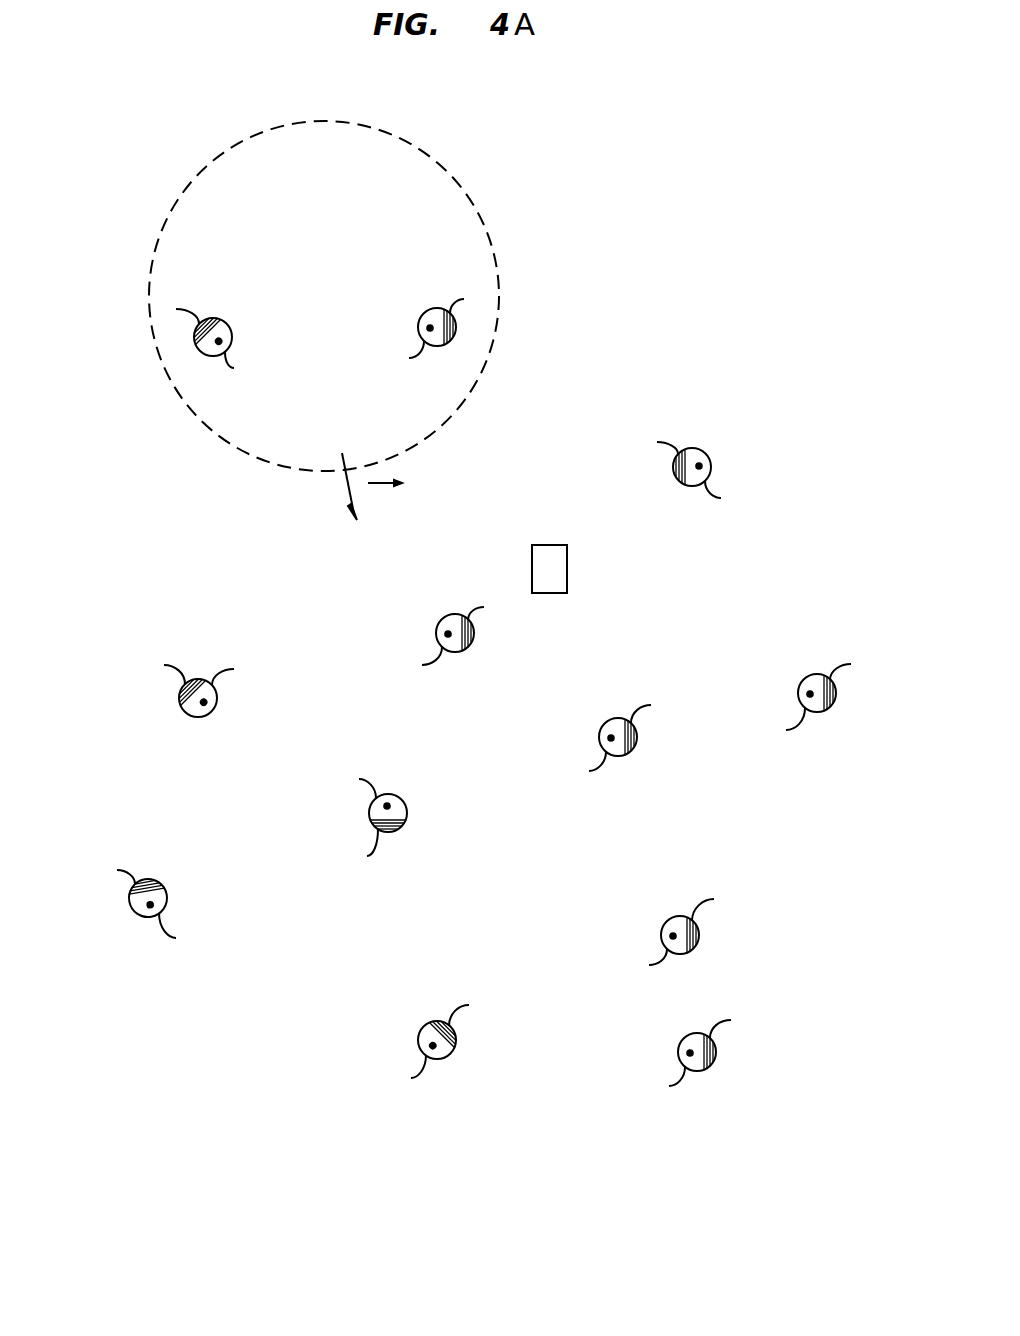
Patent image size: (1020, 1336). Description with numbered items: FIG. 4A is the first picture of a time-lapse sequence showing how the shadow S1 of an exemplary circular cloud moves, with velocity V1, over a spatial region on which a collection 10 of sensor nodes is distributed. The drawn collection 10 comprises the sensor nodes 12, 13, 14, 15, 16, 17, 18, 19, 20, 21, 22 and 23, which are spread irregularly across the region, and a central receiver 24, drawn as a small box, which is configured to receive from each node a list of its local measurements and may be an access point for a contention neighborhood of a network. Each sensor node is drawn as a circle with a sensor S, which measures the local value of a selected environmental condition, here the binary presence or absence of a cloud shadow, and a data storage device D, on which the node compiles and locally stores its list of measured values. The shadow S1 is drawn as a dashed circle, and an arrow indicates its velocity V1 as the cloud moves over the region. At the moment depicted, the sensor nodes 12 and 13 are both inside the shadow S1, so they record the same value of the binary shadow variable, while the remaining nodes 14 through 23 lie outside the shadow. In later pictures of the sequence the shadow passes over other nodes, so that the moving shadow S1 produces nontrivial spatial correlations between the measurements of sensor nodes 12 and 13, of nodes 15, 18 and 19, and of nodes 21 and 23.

The collection of sensor nodes 10 is at (293, 1171).
The sensor node 12 is at (225, 322).
The sensor node 13 is at (424, 313).
The sensor node 14 is at (704, 453).
The sensor node 15 is at (443, 619).
The sensor node 16 is at (211, 712).
The sensor node 17 is at (162, 885).
The sensor node 18 is at (401, 799).
The sensor node 19 is at (605, 723).
The sensor node 20 is at (804, 679).
The sensor node 21 is at (424, 1026).
The sensor node 22 is at (668, 920).
The sensor node 23 is at (684, 1038).
The central receiver 24 is at (532, 547).
The cloud shadow S1 is at (320, 199).
The velocity V1 is at (372, 495).